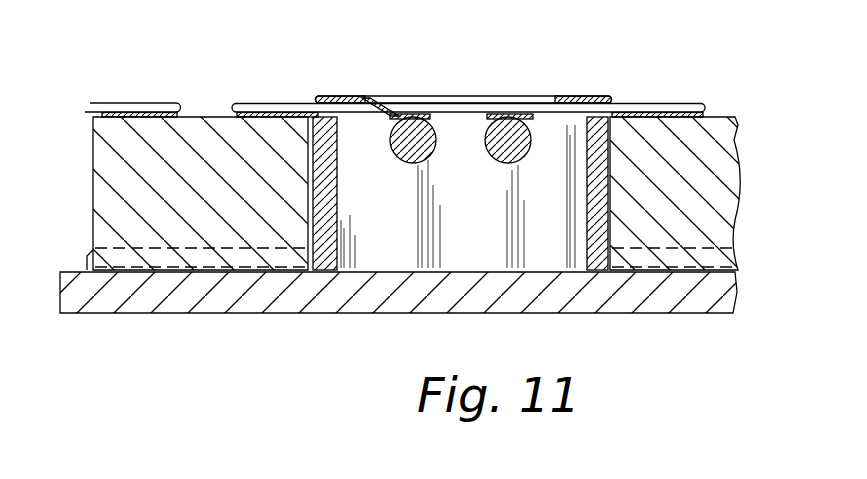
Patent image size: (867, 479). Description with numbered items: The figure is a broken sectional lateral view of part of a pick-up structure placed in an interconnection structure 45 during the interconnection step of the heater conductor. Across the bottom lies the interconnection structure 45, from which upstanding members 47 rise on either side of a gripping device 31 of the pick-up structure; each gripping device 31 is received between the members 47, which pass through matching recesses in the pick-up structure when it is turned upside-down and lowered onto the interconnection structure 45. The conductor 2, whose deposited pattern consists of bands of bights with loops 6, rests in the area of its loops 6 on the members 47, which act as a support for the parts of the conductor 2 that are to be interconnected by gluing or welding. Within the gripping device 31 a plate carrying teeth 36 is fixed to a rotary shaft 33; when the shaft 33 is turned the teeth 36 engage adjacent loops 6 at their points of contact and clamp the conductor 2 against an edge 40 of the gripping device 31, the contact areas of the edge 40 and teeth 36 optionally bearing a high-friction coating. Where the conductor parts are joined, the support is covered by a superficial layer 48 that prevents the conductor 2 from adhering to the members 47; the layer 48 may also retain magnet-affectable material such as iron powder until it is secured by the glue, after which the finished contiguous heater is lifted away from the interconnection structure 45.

The conductor 2 is at (115, 103).
The loop 6 is at (295, 110).
The gripping device 31 is at (387, 97).
The rotary shaft 33 is at (500, 150).
The teeth 36 is at (317, 97).
The edge 40 is at (333, 107).
The interconnection structure 45 is at (368, 317).
The member 47 is at (205, 137).
The superficial layer 48 is at (150, 112).